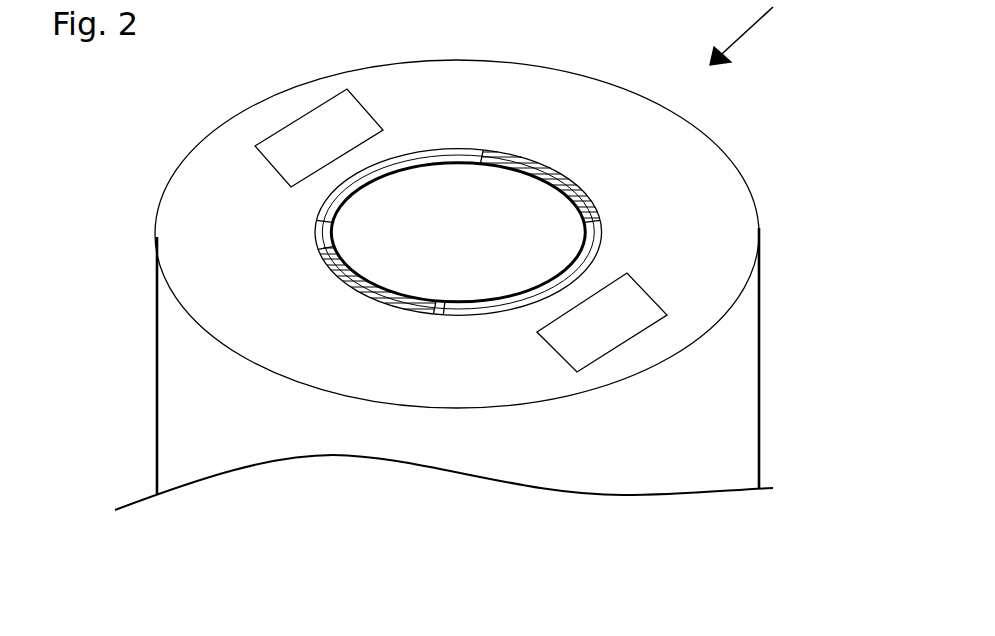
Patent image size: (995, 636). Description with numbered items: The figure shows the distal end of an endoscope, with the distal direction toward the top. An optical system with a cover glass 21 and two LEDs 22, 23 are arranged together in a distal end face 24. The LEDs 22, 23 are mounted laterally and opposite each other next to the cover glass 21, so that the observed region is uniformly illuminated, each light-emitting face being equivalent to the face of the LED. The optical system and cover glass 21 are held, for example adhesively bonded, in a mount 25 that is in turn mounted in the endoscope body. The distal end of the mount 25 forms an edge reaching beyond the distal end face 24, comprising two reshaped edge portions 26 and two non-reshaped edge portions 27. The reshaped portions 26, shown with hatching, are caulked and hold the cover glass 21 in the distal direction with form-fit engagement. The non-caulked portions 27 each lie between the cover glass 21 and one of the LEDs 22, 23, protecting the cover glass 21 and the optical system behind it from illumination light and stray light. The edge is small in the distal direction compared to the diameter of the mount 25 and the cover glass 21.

The cover glass 21 is at (481, 245).
The LED 22 is at (607, 312).
The LED 23 is at (307, 135).
The distal end face 24 is at (662, 195).
The mount 25 is at (410, 160).
The reshaped edge portions 26 is at (530, 163).
The non-reshaped edge portions 27 is at (440, 312).